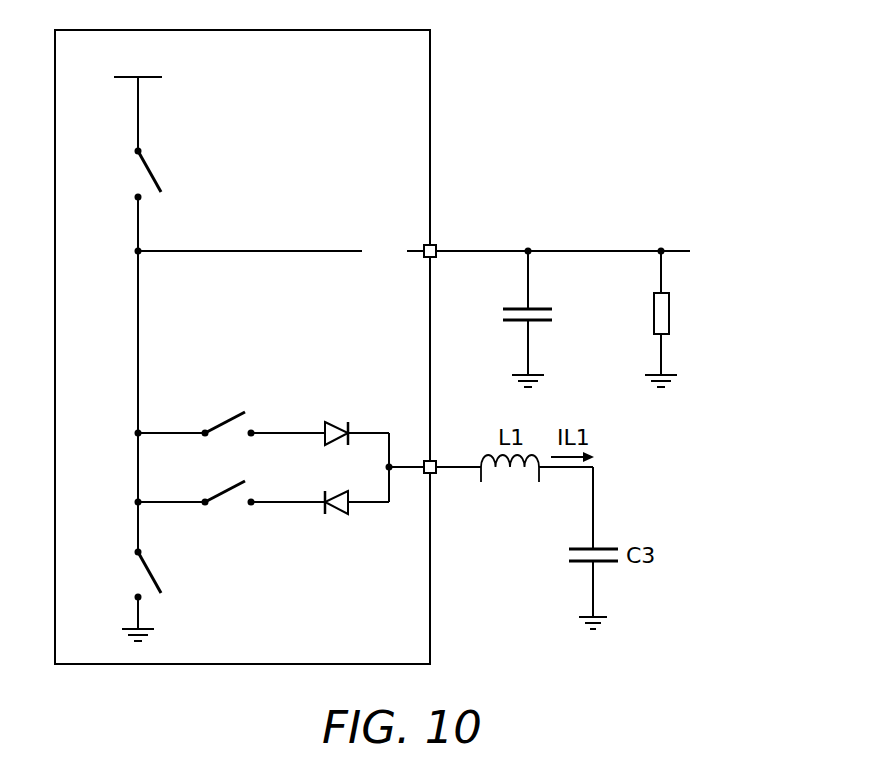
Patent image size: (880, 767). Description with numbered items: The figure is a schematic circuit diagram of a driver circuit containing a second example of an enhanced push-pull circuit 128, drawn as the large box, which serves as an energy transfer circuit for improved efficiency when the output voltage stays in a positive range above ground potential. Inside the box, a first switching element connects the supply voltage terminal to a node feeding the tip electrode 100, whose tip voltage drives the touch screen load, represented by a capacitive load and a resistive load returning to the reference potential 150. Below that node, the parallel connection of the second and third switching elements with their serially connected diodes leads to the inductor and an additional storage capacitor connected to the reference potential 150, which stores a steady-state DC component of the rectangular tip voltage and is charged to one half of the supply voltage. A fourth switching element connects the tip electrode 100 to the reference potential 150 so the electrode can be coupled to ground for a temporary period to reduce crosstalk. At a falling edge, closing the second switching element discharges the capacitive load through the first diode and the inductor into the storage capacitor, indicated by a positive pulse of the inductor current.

The enhanced push-pull circuit 128 is at (431, 41).
The tip electrode 100 is at (425, 247).
The reference potential 150 is at (675, 397).